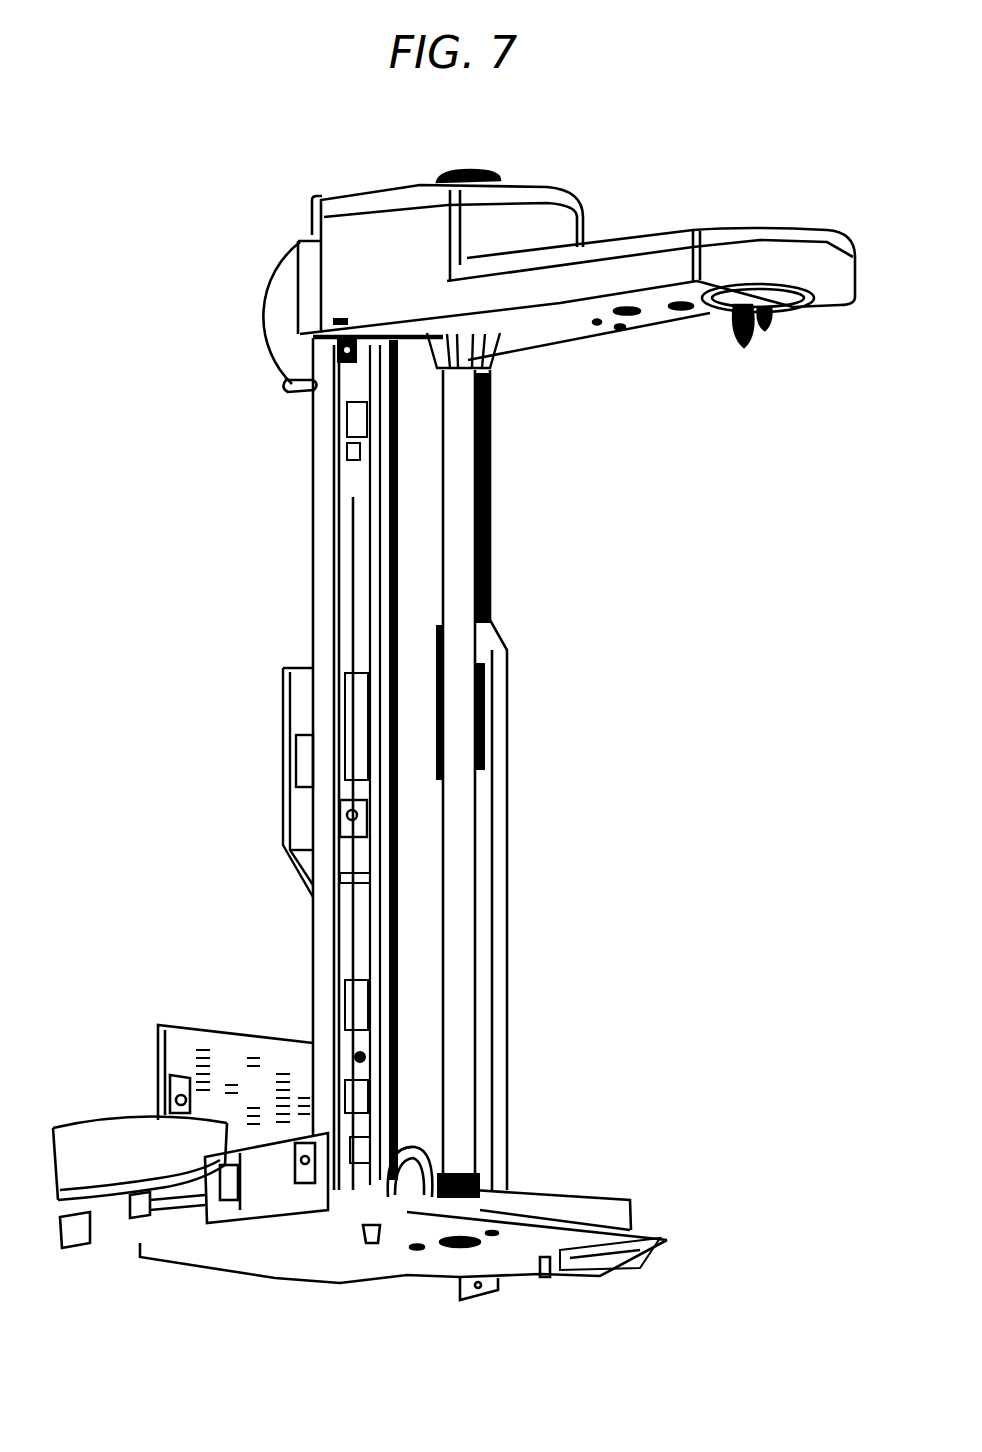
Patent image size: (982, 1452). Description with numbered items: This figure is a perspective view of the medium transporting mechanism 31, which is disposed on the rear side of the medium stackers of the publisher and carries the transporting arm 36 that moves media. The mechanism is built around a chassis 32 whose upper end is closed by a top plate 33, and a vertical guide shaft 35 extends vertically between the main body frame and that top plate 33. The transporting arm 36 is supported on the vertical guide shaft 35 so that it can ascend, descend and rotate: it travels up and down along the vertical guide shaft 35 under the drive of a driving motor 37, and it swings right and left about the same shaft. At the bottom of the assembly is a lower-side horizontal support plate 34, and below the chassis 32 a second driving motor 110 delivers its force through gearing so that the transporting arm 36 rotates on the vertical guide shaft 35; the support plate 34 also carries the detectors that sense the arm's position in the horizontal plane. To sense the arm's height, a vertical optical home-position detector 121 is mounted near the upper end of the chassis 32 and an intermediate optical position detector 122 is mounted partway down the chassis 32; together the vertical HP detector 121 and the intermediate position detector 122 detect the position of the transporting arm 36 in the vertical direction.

The medium transporting mechanism 31 is at (222, 393).
The chassis 32 is at (307, 555).
The top plate 33 is at (370, 186).
The lower-side horizontal support plate 34 is at (507, 1262).
The vertical guide shaft 35 is at (462, 962).
The transporting arm 36 is at (642, 218).
The driving motor 37 is at (280, 295).
The driving motor 110 is at (103, 1143).
The vertical optical HP detector 121 is at (340, 387).
The intermediate optical position detector 122 is at (337, 848).